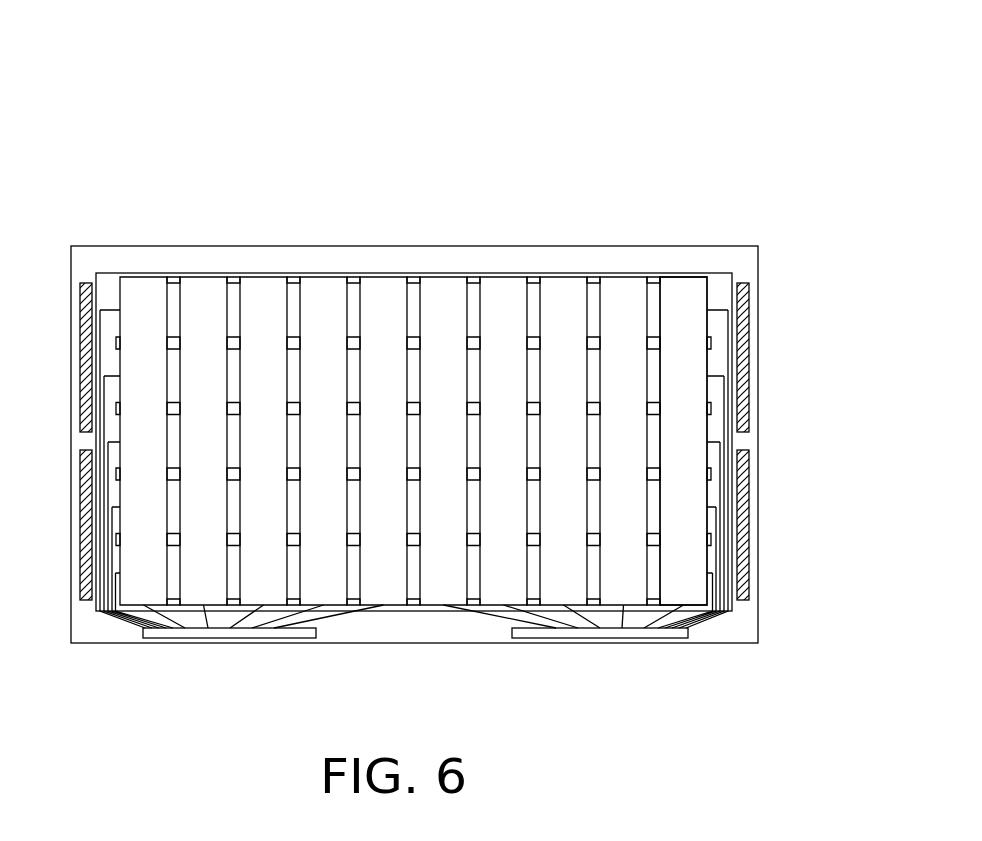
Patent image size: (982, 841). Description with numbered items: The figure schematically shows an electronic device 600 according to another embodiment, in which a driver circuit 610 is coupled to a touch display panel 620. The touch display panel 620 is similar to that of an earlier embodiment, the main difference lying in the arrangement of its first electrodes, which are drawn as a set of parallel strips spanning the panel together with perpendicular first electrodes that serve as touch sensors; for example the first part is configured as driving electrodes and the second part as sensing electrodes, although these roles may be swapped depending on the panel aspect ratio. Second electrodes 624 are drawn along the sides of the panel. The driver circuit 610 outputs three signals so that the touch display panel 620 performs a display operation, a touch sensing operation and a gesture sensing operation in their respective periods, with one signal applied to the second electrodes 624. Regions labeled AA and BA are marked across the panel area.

The display device 600 is at (743, 247).
The driver circuit 610 is at (476, 364).
The touch display panel 620 is at (422, 172).
The second electrodes 624 is at (750, 307).
The first area AA is at (292, 272).
The second area BA is at (395, 262).